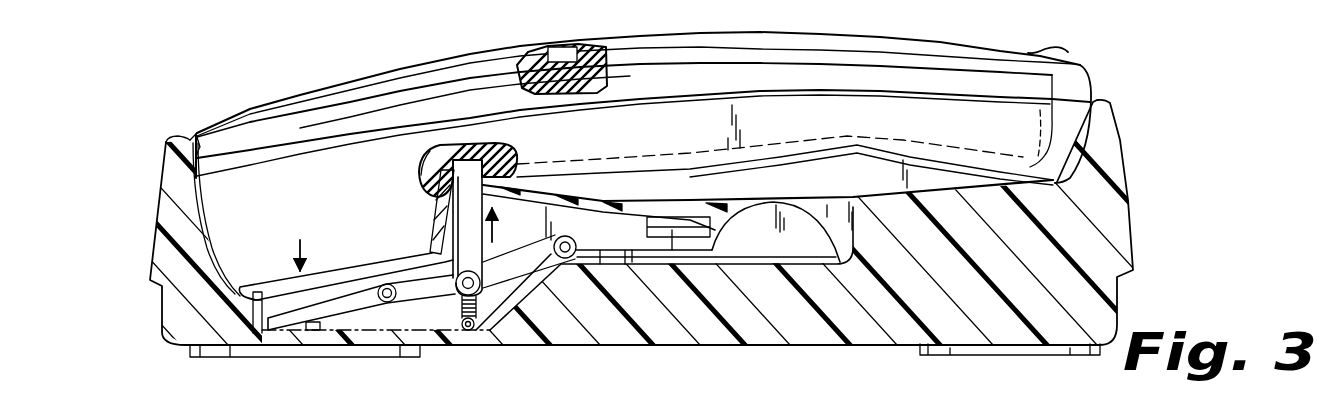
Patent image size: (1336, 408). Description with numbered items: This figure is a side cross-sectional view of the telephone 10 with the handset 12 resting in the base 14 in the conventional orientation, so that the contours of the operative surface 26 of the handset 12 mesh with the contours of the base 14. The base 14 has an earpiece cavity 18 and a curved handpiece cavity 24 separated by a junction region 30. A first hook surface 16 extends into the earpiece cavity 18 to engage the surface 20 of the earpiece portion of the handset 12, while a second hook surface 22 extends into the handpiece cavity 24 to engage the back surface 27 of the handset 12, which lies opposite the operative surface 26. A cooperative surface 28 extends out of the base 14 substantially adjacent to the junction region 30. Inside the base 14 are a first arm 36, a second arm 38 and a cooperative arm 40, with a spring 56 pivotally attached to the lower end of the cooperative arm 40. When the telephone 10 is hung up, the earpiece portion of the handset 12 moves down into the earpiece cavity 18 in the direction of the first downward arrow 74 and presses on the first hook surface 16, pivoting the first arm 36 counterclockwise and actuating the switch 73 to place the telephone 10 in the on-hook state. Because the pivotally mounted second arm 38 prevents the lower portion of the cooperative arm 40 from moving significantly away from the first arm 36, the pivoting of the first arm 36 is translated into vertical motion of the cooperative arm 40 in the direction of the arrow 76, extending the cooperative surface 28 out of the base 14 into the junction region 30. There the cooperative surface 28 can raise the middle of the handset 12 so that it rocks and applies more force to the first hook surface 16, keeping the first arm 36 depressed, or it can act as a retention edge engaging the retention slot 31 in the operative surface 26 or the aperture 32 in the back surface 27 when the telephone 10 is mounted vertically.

The telephone 10 is at (130, 197).
The handset 12 is at (218, 101).
The base 14 is at (150, 323).
The first hook surface 16 is at (262, 342).
The earpiece cavity 18 is at (187, 137).
The surface of the earpiece 20 is at (350, 273).
The second hook surface 22 is at (787, 208).
The handpiece cavity 24 is at (861, 167).
The operative surface 26 is at (957, 177).
The back surface 27 is at (1068, 52).
The cooperative surface 28 is at (503, 147).
The junction region 30 is at (432, 216).
The retention slot 31 is at (430, 151).
The aperture 32 is at (530, 50).
The first arm 36 is at (340, 300).
The second arm 38 is at (690, 243).
The cooperative arm 40 is at (466, 248).
The spring 56 is at (477, 305).
The switch 73 is at (306, 333).
The first downward arrow 74 is at (300, 240).
The arrow 76 is at (493, 226).